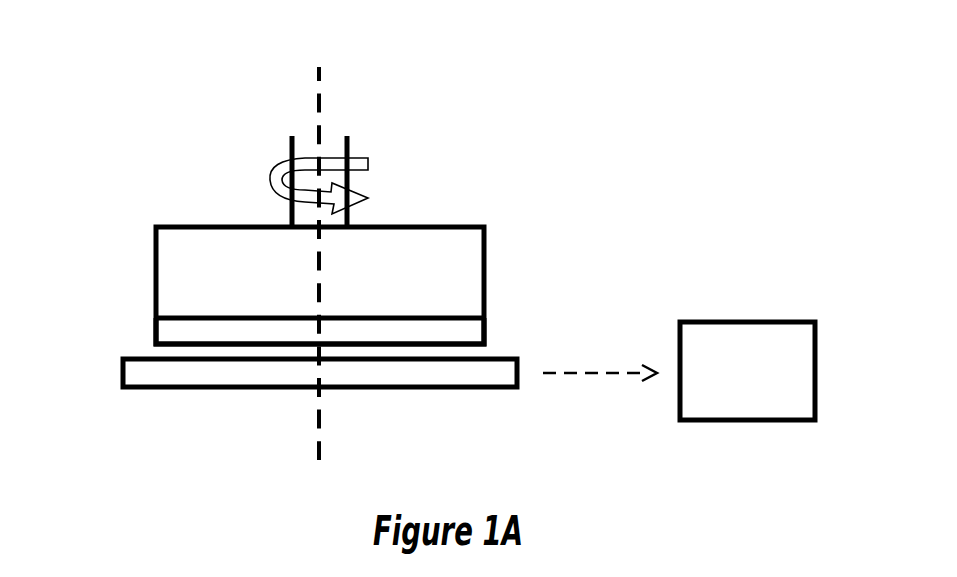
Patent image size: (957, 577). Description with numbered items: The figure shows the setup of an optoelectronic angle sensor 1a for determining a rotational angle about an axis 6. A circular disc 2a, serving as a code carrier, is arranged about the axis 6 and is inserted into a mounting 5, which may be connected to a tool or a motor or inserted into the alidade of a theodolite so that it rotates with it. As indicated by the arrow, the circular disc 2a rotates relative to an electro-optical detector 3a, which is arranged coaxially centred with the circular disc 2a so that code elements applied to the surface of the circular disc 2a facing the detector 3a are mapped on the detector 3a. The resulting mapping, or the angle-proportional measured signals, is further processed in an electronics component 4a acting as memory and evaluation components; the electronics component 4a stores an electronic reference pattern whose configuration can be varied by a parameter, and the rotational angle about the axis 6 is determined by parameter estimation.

The optoelectronic angle sensor 1a is at (726, 75).
The circular disc 2a is at (153, 328).
The electro-optical detector 3a is at (122, 367).
The electronics component 4a is at (738, 320).
The mounting 5 is at (486, 240).
The axis 6 is at (320, 99).